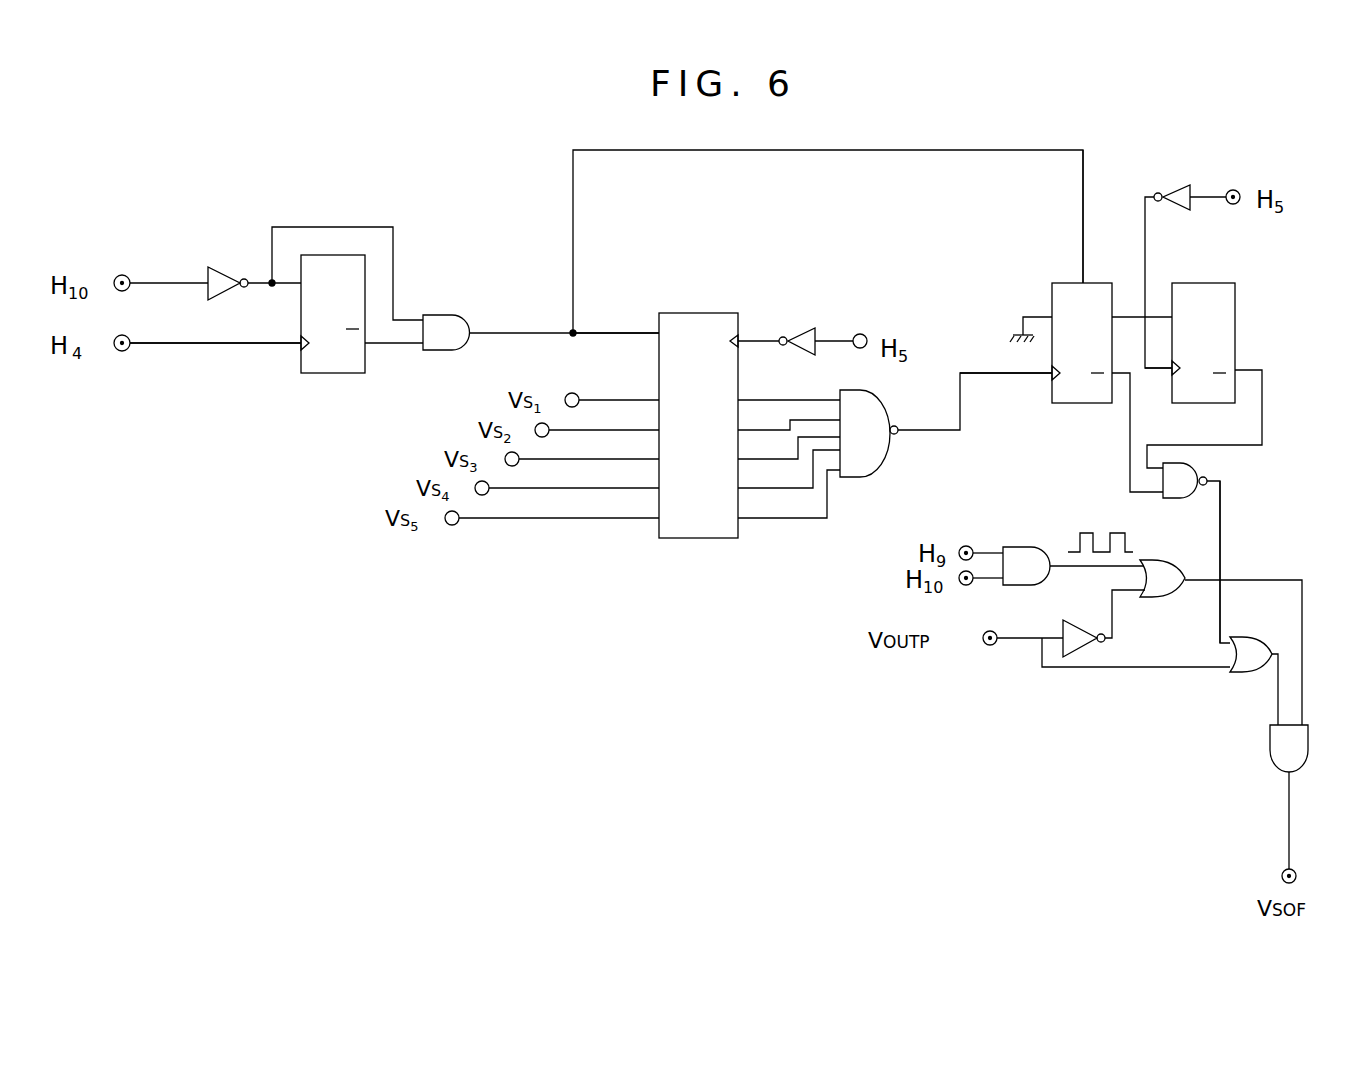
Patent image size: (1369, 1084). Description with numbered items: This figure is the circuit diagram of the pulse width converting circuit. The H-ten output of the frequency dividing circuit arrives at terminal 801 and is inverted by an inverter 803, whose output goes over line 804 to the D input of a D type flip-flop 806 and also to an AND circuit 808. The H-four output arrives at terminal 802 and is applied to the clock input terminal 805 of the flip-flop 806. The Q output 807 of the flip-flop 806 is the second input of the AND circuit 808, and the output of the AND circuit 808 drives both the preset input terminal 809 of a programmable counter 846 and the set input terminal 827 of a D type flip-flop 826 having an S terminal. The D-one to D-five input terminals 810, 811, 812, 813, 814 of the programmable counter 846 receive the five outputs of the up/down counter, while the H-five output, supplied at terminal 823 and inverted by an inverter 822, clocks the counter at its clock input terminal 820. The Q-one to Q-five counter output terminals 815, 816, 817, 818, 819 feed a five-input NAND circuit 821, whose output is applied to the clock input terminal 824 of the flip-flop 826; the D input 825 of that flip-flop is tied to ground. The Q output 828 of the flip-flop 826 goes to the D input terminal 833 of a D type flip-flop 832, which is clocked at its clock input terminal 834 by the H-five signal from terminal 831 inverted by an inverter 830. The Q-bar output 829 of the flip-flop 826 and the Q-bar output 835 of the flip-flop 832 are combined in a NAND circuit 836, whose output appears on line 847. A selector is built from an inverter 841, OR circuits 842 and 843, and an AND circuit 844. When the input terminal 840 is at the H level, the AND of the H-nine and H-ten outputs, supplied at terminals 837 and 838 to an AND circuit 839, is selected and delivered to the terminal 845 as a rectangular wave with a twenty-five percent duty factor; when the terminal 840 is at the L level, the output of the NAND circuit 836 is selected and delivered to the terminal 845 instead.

The H10 input terminal 801 is at (126, 275).
The H4 input terminal 802 is at (124, 351).
The inverter 803 is at (232, 268).
The D input line 804 is at (286, 288).
The clock input terminal 805 is at (285, 348).
The D type flip-flop 806 is at (333, 376).
The Q output 807 is at (365, 347).
The AND circuit 808 is at (475, 313).
The preset input terminal 809 is at (655, 328).
The D1 input terminal 810 is at (656, 398).
The D2 input terminal 811 is at (656, 428).
The D3 input terminal 812 is at (656, 457).
The D4 input terminal 813 is at (656, 486).
The D5 input terminal 814 is at (656, 516).
The Q1 counter output terminal 815 is at (752, 400).
The Q2 counter output terminal 816 is at (806, 420).
The Q3 counter output terminal 817 is at (806, 458).
The Q4 counter output terminal 818 is at (806, 487).
The Q5 counter output terminal 819 is at (812, 516).
The clock input terminal 820 is at (750, 330).
The 5-input NAND circuit 821 is at (866, 410).
The inverter 822 is at (815, 325).
The H5 input terminal 823 is at (862, 334).
The clock input terminal 824 is at (1045, 378).
The grounded D input 825 is at (1050, 312).
The D type flip-flop 826 is at (1050, 280).
The set input terminal 827 is at (1080, 258).
The Q output 828 is at (1128, 312).
The Q-bar output 829 is at (1120, 382).
The inverter 830 is at (1176, 183).
The H5 input terminal 831 is at (1262, 175).
The D type flip-flop 832 is at (1238, 295).
The D input terminal 833 is at (1160, 312).
The clock input terminal 834 is at (1167, 375).
The Q-bar output 835 is at (1242, 366).
The NAND circuit 836 is at (1176, 500).
The H9 input terminal 837 is at (960, 546).
The H10 input terminal 838 is at (972, 586).
The AND circuit 839 is at (1022, 545).
The input terminal 840 is at (990, 645).
The inverter 841 is at (1097, 648).
The OR circuit 842 is at (1160, 598).
The OR circuit 843 is at (1250, 674).
The AND circuit 844 is at (1270, 758).
The terminal 845 is at (1281, 878).
The programmable counter 846 is at (697, 540).
The signal line 847 is at (1222, 518).